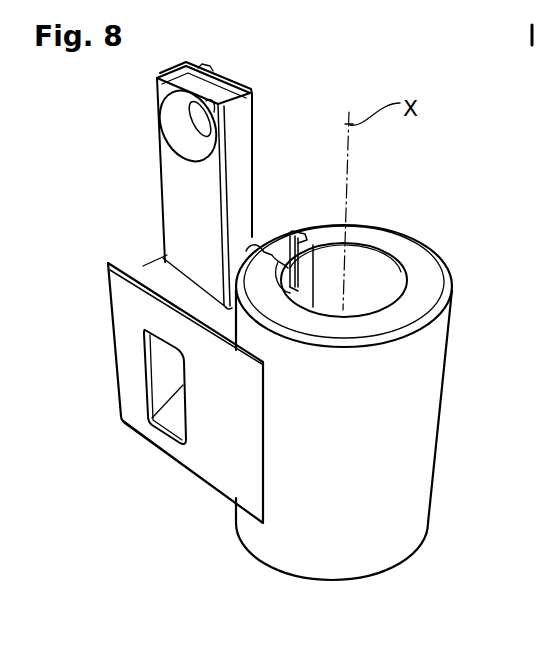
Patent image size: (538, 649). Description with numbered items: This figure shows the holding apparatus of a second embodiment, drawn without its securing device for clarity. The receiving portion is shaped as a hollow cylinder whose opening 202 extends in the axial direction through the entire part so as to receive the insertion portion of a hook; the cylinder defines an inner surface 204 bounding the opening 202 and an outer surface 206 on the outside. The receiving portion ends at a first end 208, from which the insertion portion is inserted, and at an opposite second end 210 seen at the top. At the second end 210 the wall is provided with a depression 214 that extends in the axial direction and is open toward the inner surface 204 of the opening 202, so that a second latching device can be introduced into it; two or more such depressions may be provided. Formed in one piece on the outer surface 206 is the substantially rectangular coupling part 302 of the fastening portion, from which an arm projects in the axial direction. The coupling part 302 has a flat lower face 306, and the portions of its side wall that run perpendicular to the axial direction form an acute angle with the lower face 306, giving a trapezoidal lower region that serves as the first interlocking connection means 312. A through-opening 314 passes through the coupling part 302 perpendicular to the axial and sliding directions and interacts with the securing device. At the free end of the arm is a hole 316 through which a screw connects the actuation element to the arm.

The opening 202 is at (381, 262).
The inner surface 204 is at (376, 292).
The outer surface 206 is at (374, 460).
The first end 208 is at (388, 570).
The second end 210 is at (406, 243).
The depression 214 is at (285, 248).
The coupling part 302 is at (125, 313).
The lower face 306 is at (206, 468).
The first interlocking connection means 312 is at (110, 262).
The through-opening 314 is at (160, 377).
The hole 316 is at (182, 128).